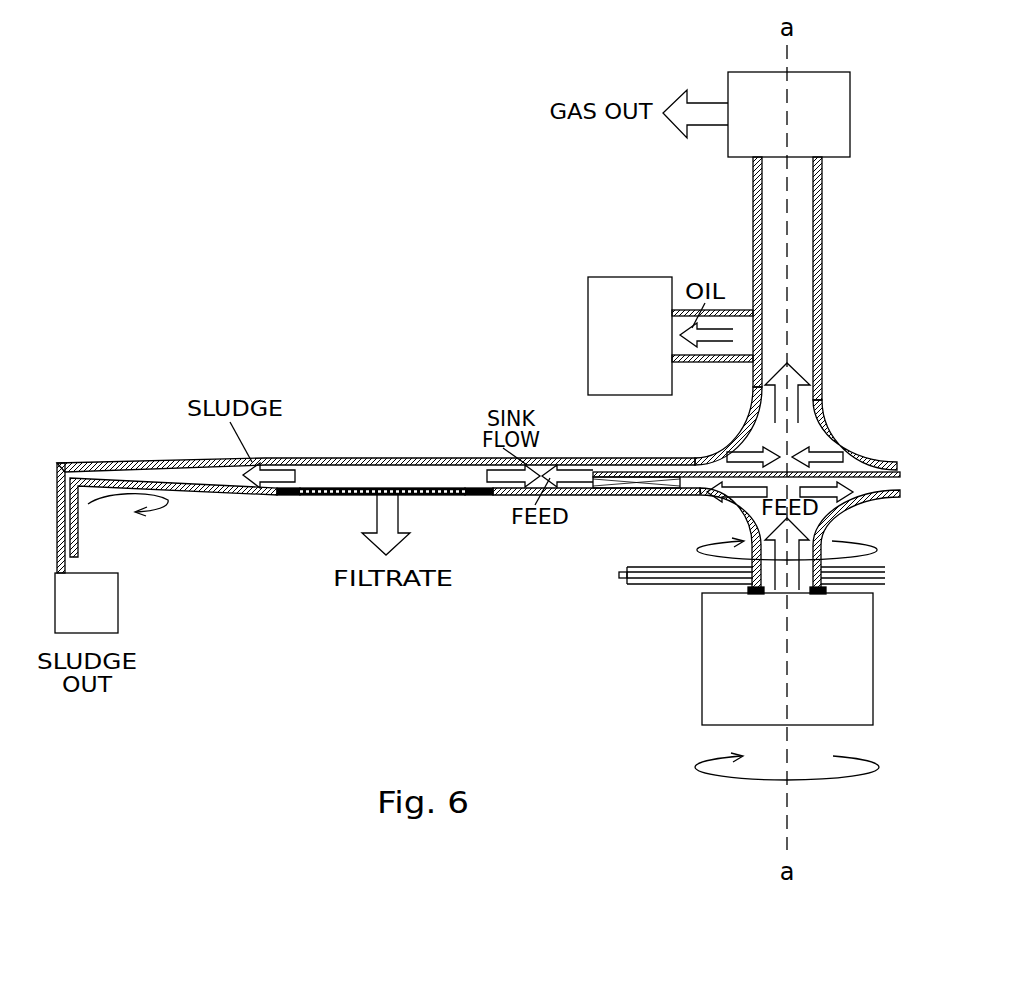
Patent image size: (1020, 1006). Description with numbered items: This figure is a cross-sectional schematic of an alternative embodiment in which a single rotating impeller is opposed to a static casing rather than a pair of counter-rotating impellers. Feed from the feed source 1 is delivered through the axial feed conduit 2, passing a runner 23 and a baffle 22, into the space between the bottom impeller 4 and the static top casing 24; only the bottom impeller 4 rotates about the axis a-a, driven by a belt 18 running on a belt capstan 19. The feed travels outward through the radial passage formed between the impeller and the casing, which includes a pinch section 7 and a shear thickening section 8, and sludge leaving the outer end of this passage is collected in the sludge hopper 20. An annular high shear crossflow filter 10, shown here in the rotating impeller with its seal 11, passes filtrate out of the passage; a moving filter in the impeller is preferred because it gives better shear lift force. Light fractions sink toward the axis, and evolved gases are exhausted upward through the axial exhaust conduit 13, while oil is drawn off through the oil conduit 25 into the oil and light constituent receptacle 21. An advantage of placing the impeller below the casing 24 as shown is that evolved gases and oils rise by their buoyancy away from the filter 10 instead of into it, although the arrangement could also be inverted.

The feed source 1 is at (745, 674).
The axial feed conduit 2 is at (728, 508).
The bottom impeller 4 is at (600, 497).
The pinch section of radial passage 7 is at (223, 477).
The shear thickening section of radial passage 8 is at (120, 476).
The annular high shear crossflow filter 10 is at (343, 495).
The seal 11 is at (277, 492).
The axial exhaust conduit 13 is at (748, 232).
The belt 18 is at (620, 578).
The belt capstan 19 is at (655, 585).
The sludge hopper 20 is at (74, 614).
The oil and light constituent receptacle 21 is at (615, 348).
The baffle 22 is at (712, 461).
The runner 23 is at (613, 477).
The top casing 24 is at (397, 457).
The oil conduit 25 is at (731, 363).